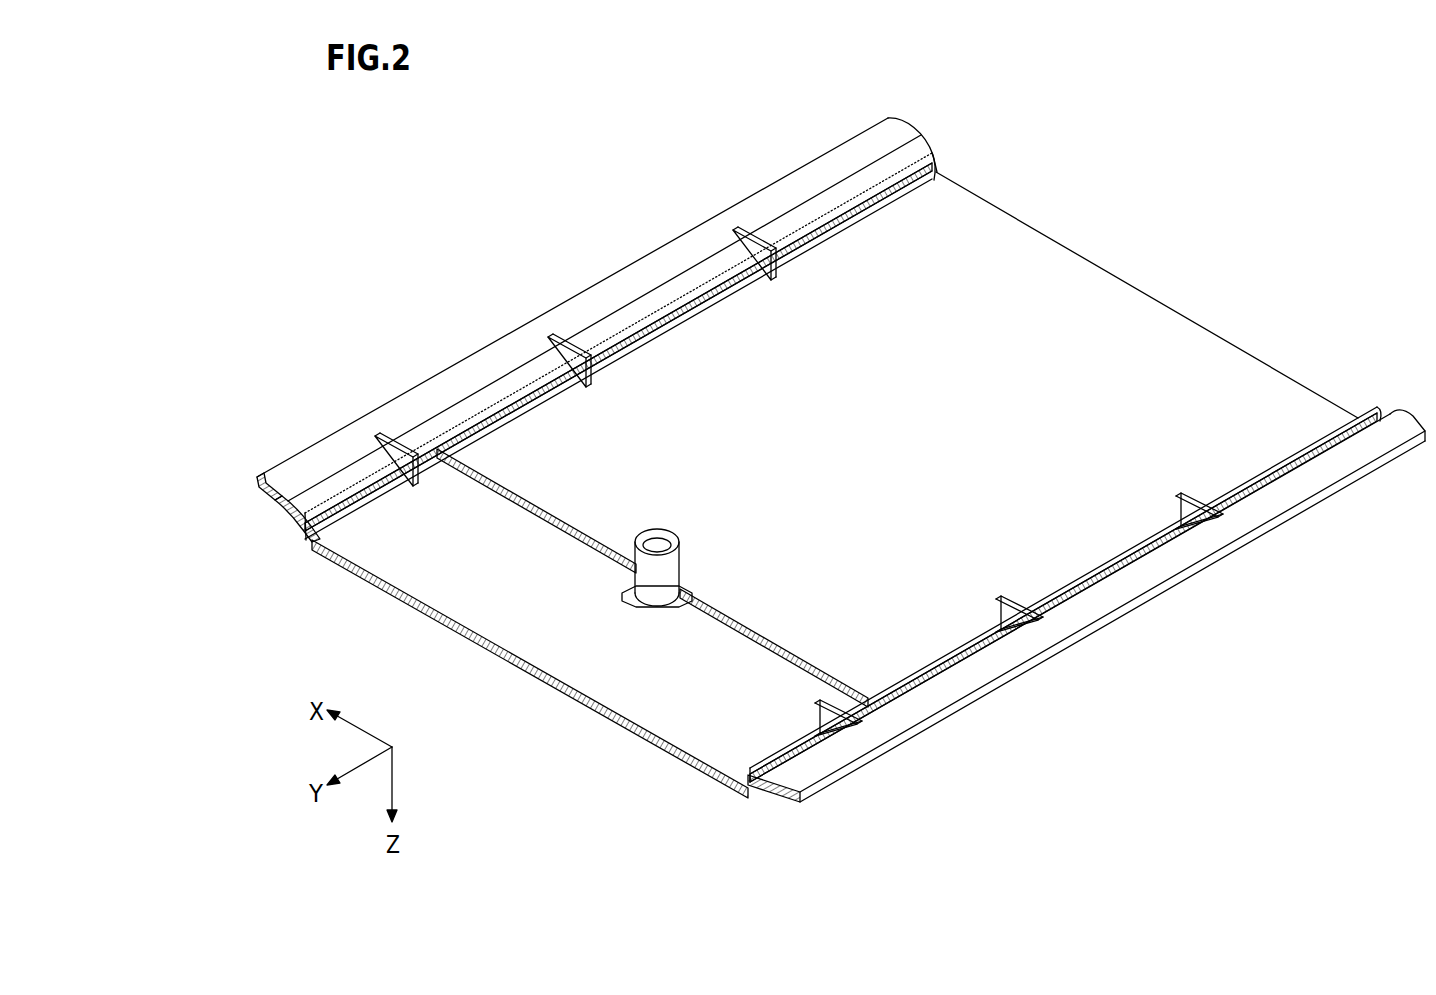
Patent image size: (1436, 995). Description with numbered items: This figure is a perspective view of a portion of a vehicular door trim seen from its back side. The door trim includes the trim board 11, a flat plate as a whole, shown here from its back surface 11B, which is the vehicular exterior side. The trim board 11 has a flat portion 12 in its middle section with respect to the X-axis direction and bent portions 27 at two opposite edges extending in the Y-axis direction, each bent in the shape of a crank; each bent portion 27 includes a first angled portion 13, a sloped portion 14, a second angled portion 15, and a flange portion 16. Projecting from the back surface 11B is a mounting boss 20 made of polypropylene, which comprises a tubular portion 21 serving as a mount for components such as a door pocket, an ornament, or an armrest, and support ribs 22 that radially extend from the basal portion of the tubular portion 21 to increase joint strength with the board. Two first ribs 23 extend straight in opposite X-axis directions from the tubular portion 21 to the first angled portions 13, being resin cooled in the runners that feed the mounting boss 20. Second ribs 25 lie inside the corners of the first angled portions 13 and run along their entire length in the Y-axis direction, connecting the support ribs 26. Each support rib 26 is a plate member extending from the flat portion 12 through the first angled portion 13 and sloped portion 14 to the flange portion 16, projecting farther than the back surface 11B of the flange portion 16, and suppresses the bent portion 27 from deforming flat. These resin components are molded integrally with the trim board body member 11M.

The trim board 11 is at (1003, 205).
The back surface 11B is at (1067, 292).
The trim board body member 11M is at (337, 288).
The flat portion 12 is at (380, 555).
The first angled portion 13 is at (312, 540).
The sloped portion 14 is at (315, 500).
The second angled portion 15 is at (361, 455).
The flange portion 16 is at (438, 393).
The bent portion 27 is at (418, 333).
The mounting boss 20 is at (567, 782).
The tubular portion 21 is at (632, 549).
The support rib 22 is at (632, 600).
The first rib 23 is at (538, 517).
The second rib 25 is at (825, 235).
The support rib 26 is at (583, 363).